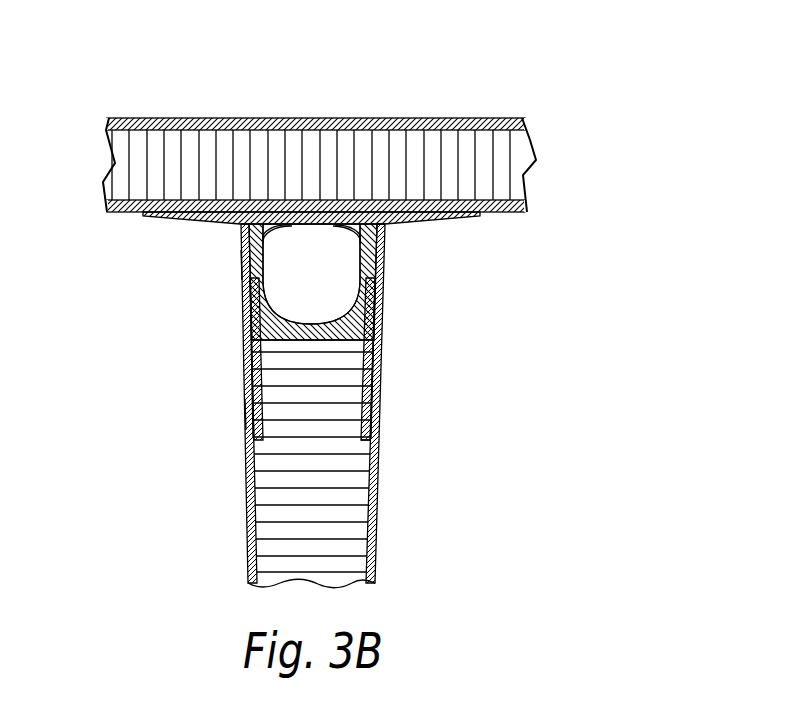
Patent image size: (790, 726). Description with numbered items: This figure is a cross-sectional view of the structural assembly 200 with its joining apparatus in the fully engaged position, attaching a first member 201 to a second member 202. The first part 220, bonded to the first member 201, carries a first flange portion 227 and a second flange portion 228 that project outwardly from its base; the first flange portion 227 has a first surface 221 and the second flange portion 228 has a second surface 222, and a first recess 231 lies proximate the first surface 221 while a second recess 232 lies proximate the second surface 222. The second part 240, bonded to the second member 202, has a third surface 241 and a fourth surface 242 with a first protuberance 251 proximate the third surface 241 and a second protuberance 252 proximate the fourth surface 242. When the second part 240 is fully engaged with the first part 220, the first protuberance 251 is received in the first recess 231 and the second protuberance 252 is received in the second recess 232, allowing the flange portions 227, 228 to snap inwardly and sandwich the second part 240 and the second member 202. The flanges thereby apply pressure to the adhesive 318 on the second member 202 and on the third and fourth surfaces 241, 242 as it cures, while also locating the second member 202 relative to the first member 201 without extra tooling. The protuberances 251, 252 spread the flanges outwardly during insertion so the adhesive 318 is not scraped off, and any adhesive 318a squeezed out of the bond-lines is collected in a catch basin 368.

The structural assembly 200 is at (563, 256).
The first member 201 is at (462, 118).
The second member 202 is at (368, 545).
The first part 220 is at (400, 223).
The first surface 221 is at (373, 440).
The second surface 222 is at (246, 405).
The first flange portion 227 is at (378, 352).
The second flange portion 228 is at (250, 380).
The first recess 231 is at (338, 222).
The second recess 232 is at (307, 218).
The second part 240 is at (243, 330).
The third surface 241 is at (386, 266).
The fourth surface 242 is at (240, 263).
The first protuberance 251 is at (386, 250).
The second protuberance 252 is at (240, 253).
The adhesive 318 is at (250, 390).
The squeezed-out adhesive 318a is at (287, 215).
The catch basin 368 is at (262, 308).